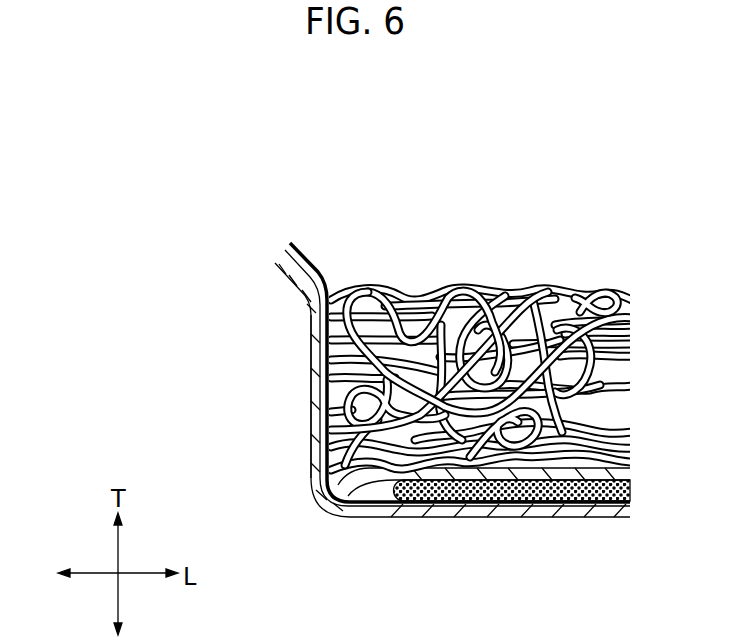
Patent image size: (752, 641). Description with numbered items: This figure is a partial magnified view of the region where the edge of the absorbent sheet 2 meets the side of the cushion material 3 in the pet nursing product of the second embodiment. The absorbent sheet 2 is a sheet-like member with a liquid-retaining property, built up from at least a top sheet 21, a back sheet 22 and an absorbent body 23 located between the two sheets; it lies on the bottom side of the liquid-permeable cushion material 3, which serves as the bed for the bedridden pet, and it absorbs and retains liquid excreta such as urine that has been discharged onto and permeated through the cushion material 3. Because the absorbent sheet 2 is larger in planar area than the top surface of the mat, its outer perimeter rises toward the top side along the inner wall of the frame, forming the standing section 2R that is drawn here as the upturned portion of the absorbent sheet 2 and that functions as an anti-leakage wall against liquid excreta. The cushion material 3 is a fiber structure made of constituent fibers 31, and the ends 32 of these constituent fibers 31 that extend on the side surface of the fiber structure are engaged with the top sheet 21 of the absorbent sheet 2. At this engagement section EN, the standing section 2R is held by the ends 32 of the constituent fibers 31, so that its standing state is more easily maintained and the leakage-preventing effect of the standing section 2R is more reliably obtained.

The absorbent sheet 2 is at (296, 232).
The top sheet 21 is at (300, 264).
The back sheet 22 is at (288, 282).
The standing section 2R is at (293, 390).
The cushion material 3 is at (585, 250).
The constituent fibers 31 is at (603, 287).
The ends 32 is at (337, 289).
The engagement section EN is at (337, 293).
The absorbent body 23 is at (448, 499).